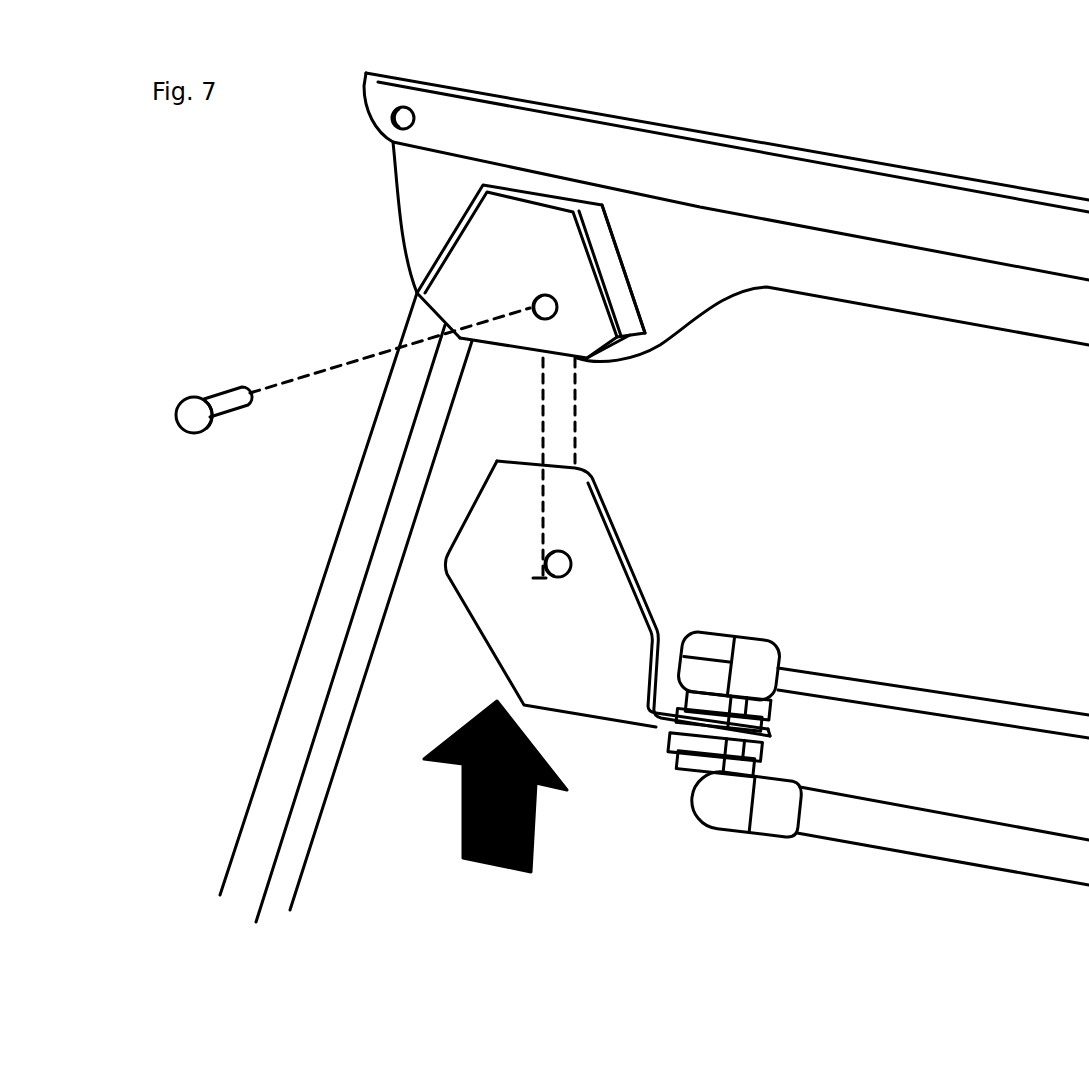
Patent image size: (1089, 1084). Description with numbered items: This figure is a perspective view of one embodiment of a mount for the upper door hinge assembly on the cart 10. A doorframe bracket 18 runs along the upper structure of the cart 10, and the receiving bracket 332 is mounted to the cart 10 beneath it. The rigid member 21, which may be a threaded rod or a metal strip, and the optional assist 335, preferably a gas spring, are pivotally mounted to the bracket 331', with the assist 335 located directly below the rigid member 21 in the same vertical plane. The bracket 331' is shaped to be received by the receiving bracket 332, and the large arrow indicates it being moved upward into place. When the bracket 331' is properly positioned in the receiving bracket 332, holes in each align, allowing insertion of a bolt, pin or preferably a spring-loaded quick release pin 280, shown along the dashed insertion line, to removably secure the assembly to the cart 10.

The cart 10 is at (654, 497).
The doorframe bracket 18 is at (974, 233).
The rigid member 21 is at (904, 684).
The spring-loaded quick release pin 280 is at (222, 393).
The bracket 331' is at (607, 598).
The receiving bracket 332 is at (529, 257).
The assist 335 is at (906, 854).